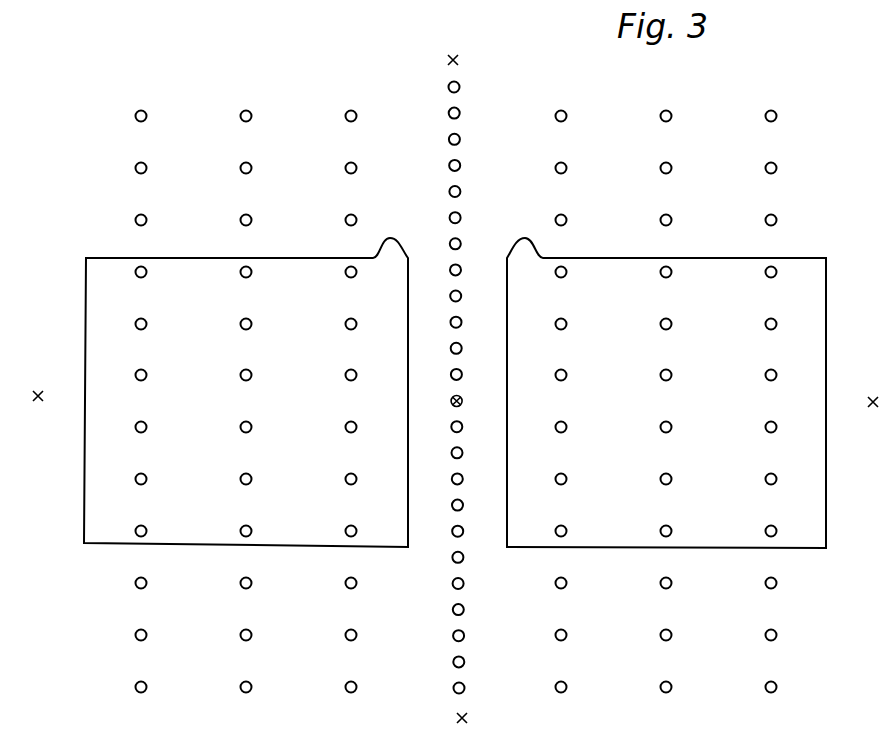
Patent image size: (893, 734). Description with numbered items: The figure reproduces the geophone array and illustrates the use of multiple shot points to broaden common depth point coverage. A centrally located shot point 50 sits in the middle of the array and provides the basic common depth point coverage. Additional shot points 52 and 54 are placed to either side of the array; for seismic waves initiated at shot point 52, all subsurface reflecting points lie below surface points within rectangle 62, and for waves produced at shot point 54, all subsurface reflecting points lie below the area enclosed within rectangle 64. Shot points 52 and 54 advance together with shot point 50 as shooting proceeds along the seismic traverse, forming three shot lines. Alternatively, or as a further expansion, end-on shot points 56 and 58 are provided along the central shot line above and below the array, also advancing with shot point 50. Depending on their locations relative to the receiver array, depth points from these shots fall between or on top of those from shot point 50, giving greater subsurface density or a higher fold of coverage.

The centrally located shot point 50 is at (463, 402).
The shot point 52 is at (873, 398).
The shot point 54 is at (37, 392).
The end-on shot point 56 is at (459, 60).
The end-on shot point 58 is at (489, 723).
The rectangle 62 is at (821, 291).
The rectangle 64 is at (92, 291).